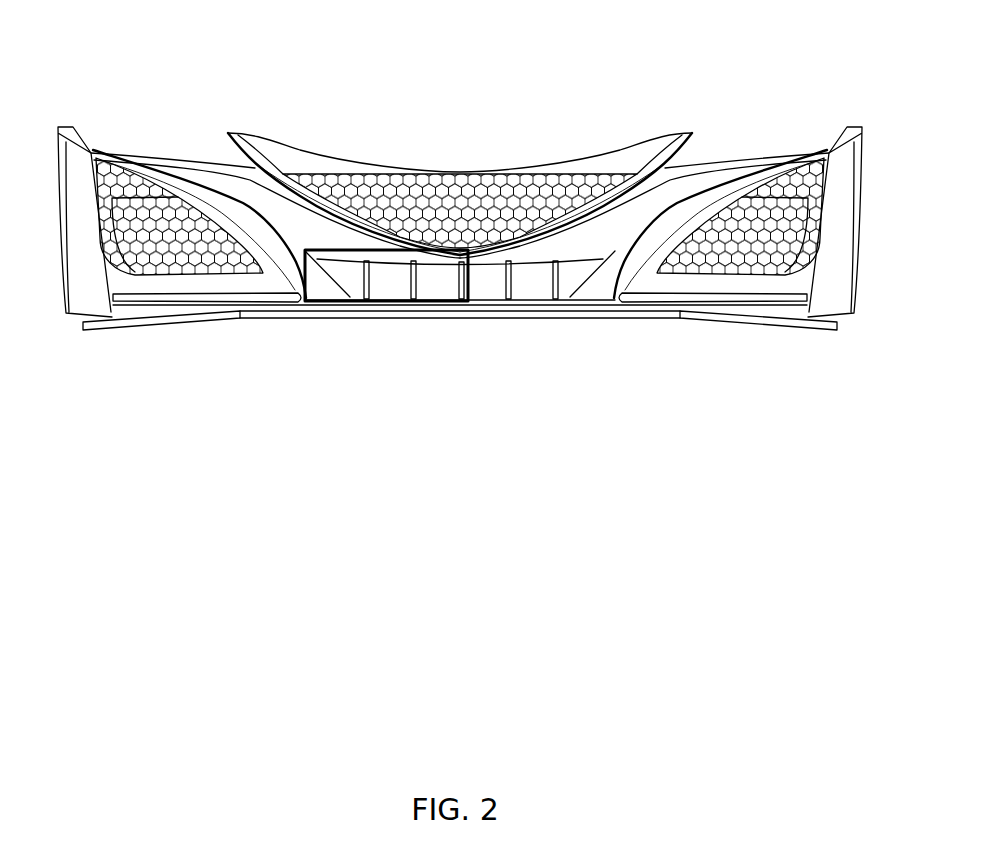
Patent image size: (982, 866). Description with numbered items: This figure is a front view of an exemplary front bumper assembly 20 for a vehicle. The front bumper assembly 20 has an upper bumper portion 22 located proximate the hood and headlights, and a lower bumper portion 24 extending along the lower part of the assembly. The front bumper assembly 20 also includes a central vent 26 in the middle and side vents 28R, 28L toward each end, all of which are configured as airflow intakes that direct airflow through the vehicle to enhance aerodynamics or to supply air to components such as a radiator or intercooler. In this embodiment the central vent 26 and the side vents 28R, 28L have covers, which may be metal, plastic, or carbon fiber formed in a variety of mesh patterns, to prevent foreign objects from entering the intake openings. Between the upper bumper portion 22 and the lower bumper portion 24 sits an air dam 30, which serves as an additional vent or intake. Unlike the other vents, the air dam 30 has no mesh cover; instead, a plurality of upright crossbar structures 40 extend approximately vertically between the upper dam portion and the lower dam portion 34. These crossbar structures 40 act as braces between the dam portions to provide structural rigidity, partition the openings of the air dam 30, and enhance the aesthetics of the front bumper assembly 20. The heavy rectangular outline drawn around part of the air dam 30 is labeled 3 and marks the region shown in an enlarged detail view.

The front bumper assembly 20 is at (248, 386).
The upper bumper portion 22 is at (516, 256).
The lower bumper portion 24 is at (592, 305).
The central vent 26 is at (346, 174).
The side vent 28R is at (111, 312).
The side vent 28L is at (807, 303).
The air dam 30 is at (654, 254).
The lower dam portion 34 is at (567, 262).
The upright crossbar structures 40 is at (555, 300).
The detail region shown in FIG. 3 is at (272, 302).